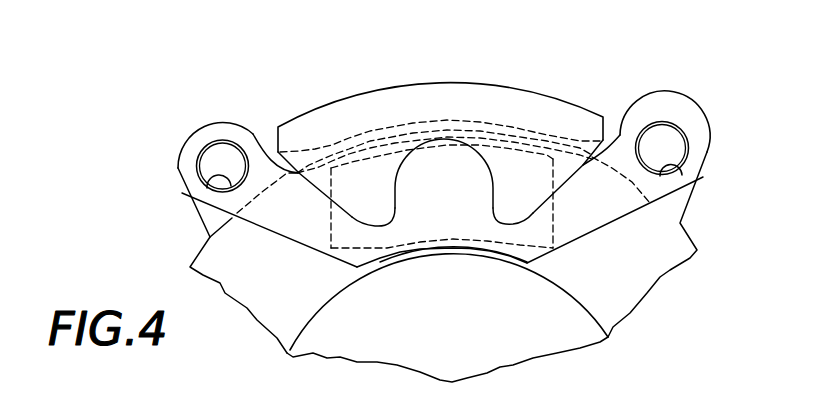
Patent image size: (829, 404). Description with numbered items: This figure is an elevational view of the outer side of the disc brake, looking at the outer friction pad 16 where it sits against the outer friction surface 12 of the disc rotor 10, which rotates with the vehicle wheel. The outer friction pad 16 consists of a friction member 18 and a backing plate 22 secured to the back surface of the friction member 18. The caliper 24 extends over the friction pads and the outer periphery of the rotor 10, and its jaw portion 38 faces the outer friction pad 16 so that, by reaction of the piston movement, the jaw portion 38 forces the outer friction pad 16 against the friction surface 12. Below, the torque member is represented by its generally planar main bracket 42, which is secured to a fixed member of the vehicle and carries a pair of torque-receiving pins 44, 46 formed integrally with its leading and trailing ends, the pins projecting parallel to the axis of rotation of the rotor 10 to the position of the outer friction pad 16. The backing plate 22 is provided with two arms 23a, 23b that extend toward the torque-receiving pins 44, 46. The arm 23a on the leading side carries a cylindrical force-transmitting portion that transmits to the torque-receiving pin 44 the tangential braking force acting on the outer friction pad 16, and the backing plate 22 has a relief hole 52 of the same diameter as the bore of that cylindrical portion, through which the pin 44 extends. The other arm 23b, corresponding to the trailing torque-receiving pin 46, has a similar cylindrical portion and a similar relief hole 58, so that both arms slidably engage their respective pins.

The disc rotor 10 is at (567, 338).
The friction surface 12 is at (658, 275).
The outer friction pad 16 is at (452, 260).
The friction member 18 is at (390, 240).
The backing plate 22 is at (590, 243).
The arm 23a is at (273, 207).
The arm 23b is at (623, 198).
The caliper 24 is at (462, 54).
The jaw portion 38 is at (383, 198).
The main bracket 42 is at (682, 199).
The torque-receiving pin 44 is at (207, 163).
The torque-receiving pin 46 is at (674, 147).
The relief hole 52 is at (212, 184).
The relief hole 58 is at (680, 168).